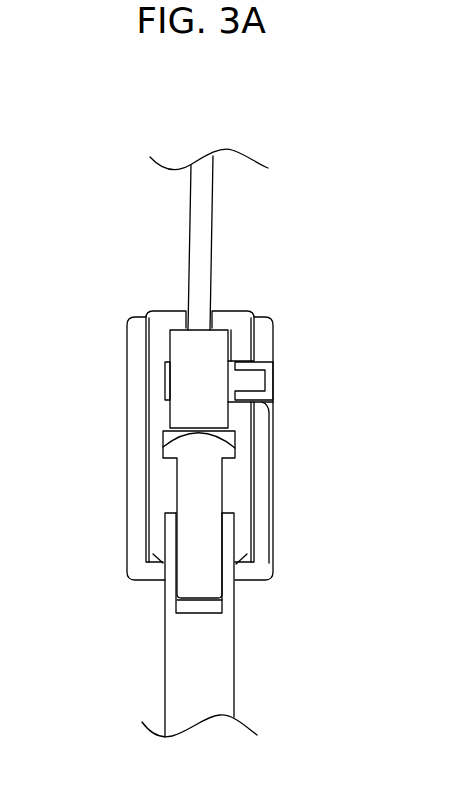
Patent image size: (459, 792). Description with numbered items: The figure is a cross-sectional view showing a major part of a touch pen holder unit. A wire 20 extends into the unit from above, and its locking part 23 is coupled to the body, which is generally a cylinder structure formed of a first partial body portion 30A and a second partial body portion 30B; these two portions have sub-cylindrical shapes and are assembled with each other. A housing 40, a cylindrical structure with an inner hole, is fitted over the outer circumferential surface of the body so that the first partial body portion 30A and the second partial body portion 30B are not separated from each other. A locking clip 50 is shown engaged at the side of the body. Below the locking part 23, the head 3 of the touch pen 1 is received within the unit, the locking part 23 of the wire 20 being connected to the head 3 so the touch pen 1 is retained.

The touch pen 1 is at (185, 667).
The head 3 is at (173, 445).
The wire 20 is at (200, 235).
The locking part 23 is at (187, 377).
The first partial body portion 30A is at (240, 318).
The second partial body portion 30B is at (170, 310).
The housing 40 is at (260, 483).
The locking clip 50 is at (263, 382).